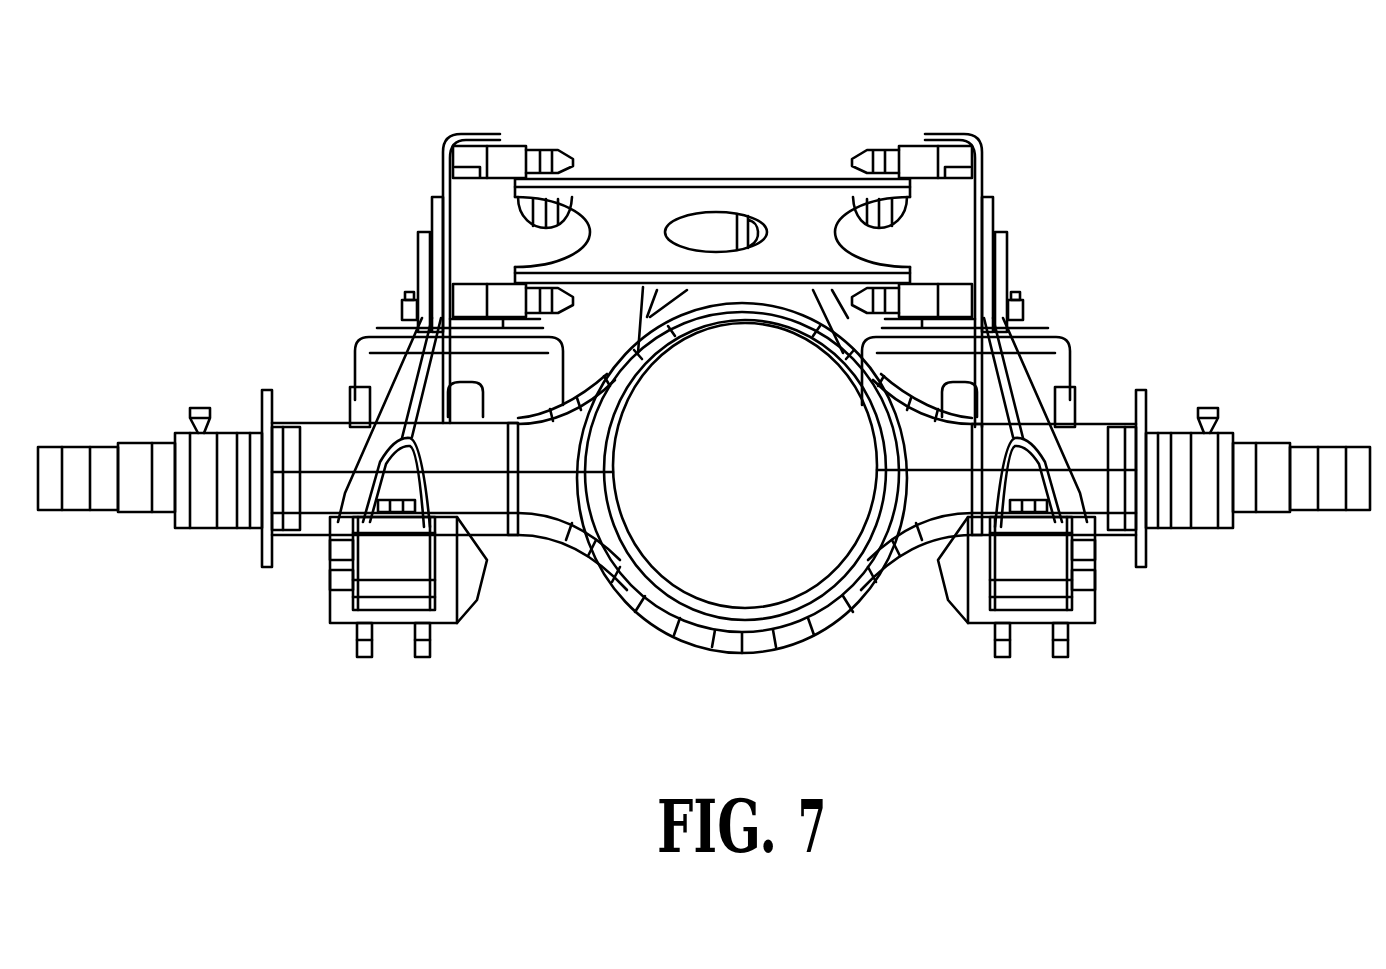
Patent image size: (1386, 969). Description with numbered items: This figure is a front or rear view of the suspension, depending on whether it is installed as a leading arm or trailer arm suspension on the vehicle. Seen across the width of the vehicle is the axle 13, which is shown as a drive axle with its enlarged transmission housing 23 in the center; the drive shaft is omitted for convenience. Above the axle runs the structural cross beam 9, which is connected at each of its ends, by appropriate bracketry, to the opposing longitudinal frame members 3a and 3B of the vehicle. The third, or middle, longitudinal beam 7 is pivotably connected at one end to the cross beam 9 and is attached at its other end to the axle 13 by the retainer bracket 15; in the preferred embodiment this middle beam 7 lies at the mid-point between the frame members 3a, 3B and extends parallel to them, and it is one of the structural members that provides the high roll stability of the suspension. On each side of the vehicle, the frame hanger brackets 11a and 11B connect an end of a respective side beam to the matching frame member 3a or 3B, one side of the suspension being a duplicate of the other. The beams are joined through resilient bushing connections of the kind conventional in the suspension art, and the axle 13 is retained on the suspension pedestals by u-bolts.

The longitudinal frame member 3B is at (443, 150).
The longitudinal frame member 3a is at (983, 154).
The structural cross beam 9 is at (638, 212).
The third longitudinal beam 7 is at (717, 232).
The frame hanger bracket 11B is at (397, 392).
The frame hanger bracket 11a is at (1027, 400).
The axle 13 is at (100, 457).
The retainer bracket 15 is at (650, 325).
The transmission housing 23 is at (767, 474).